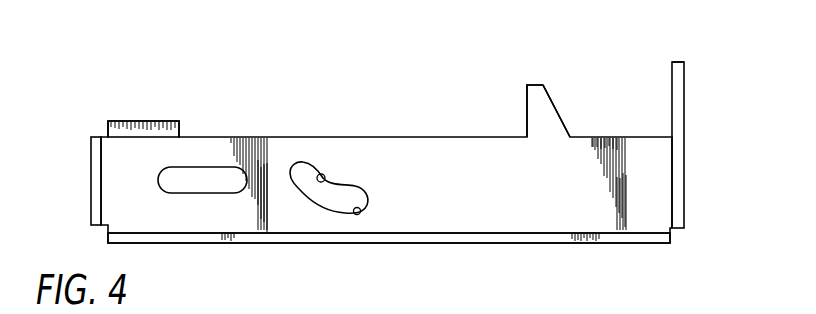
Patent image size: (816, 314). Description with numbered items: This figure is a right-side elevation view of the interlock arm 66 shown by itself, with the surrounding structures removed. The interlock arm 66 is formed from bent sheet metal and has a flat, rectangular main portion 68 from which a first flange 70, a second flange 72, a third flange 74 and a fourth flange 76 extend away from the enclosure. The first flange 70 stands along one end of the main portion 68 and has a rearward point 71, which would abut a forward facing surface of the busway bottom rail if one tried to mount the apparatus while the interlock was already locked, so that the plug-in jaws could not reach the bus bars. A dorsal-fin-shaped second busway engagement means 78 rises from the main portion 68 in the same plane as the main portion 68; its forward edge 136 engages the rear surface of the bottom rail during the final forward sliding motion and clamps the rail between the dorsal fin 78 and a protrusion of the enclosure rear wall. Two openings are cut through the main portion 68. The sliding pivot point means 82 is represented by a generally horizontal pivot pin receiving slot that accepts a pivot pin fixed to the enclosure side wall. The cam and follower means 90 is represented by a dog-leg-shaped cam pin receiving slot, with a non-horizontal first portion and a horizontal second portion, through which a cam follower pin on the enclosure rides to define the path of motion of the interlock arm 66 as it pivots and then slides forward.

The interlock arm 66 is at (461, 82).
The main portion 68 is at (502, 199).
The first flange 70 is at (684, 166).
The rearward point 71 is at (684, 62).
The second flange 72 is at (538, 238).
The third flange 74 is at (97, 183).
The fourth flange 76 is at (145, 125).
The second busway engagement means 78 is at (545, 103).
The sliding pivot point means 82 is at (200, 191).
The cam and follower means 90 is at (321, 178).
The forward edge 136 is at (526, 86).